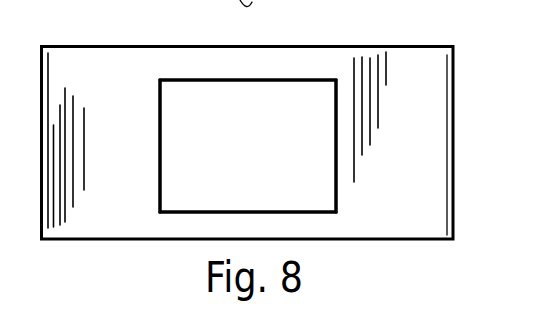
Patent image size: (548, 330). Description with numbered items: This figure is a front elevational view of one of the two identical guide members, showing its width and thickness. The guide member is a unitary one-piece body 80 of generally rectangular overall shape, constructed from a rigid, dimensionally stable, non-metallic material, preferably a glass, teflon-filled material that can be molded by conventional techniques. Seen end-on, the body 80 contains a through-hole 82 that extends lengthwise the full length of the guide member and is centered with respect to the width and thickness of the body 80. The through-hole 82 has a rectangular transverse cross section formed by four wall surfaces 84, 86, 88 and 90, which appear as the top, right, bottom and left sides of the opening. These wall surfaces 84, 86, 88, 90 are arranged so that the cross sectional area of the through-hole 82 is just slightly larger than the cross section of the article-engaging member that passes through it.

The body 80 is at (454, 47).
The through-hole 82 is at (252, 87).
The wall surface 84 is at (232, 82).
The wall surface 86 is at (335, 148).
The wall surface 88 is at (248, 210).
The wall surface 90 is at (162, 158).